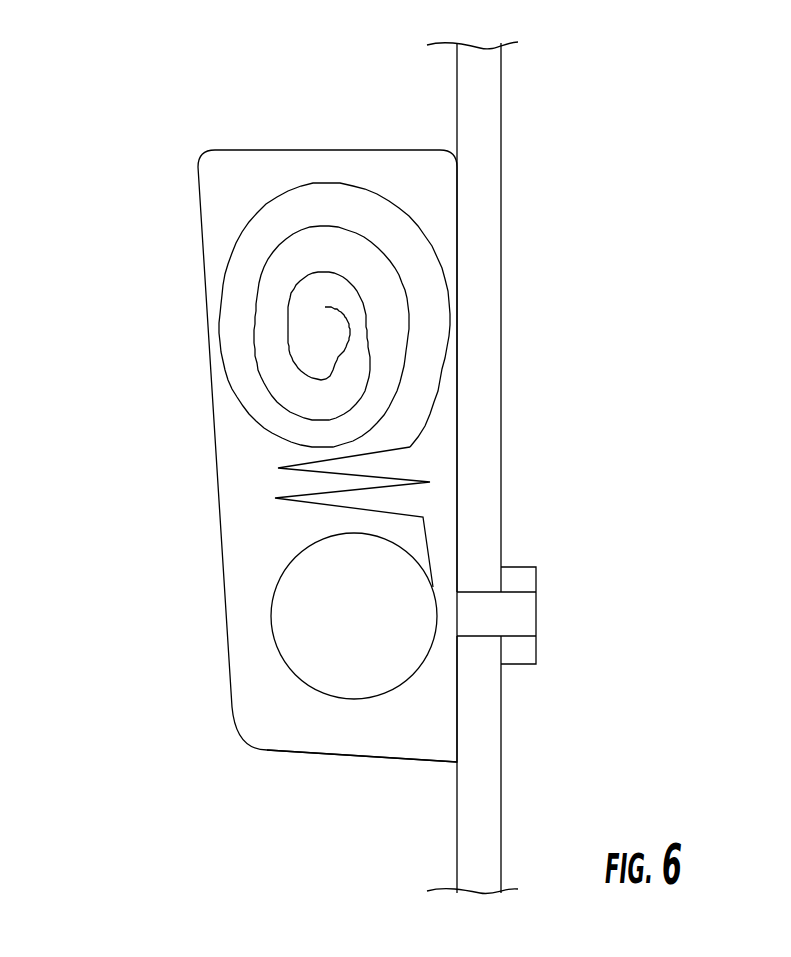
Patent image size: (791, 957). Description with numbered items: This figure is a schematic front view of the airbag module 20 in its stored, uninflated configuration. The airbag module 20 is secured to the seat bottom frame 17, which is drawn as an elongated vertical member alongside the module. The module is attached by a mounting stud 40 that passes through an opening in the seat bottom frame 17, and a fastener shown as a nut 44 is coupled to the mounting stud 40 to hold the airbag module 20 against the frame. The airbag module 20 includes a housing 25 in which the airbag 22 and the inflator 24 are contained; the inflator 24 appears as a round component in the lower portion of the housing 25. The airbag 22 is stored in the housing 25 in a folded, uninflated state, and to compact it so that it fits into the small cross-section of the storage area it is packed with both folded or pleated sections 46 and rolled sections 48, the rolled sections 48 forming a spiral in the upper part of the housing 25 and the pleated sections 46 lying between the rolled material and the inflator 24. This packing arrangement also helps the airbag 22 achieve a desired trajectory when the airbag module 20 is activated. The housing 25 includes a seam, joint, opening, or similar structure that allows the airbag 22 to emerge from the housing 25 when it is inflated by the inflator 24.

The seat bottom frame 17 is at (488, 222).
The airbag module 20 is at (199, 110).
The airbag 22 is at (198, 407).
The inflator 24 is at (310, 627).
The housing 25 is at (303, 752).
The mounting stud 40 is at (530, 613).
The nut 44 is at (522, 575).
The folded sections 46 is at (275, 498).
The rolled sections 48 is at (222, 270).